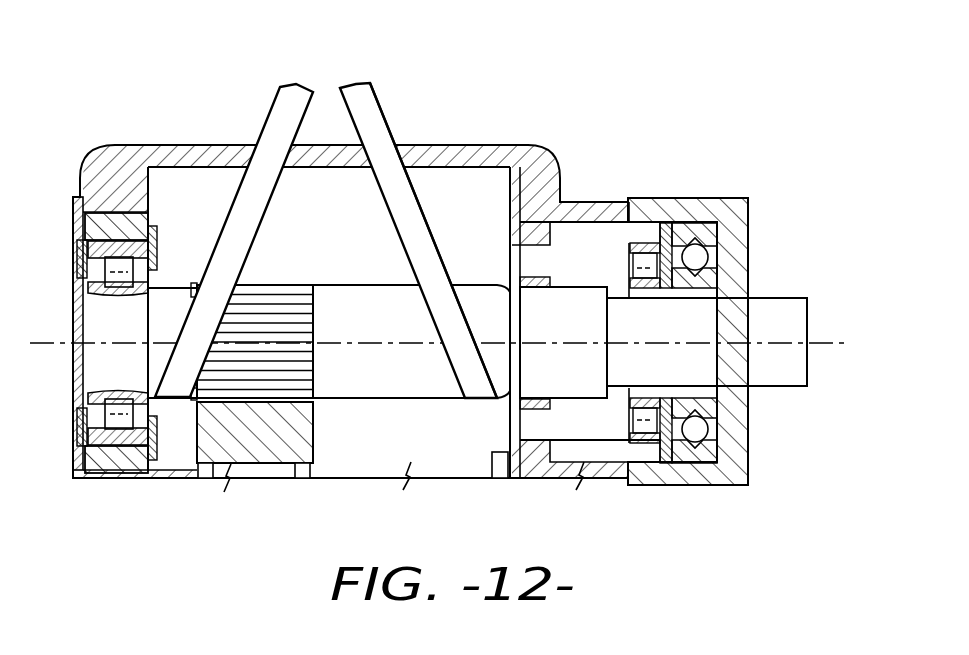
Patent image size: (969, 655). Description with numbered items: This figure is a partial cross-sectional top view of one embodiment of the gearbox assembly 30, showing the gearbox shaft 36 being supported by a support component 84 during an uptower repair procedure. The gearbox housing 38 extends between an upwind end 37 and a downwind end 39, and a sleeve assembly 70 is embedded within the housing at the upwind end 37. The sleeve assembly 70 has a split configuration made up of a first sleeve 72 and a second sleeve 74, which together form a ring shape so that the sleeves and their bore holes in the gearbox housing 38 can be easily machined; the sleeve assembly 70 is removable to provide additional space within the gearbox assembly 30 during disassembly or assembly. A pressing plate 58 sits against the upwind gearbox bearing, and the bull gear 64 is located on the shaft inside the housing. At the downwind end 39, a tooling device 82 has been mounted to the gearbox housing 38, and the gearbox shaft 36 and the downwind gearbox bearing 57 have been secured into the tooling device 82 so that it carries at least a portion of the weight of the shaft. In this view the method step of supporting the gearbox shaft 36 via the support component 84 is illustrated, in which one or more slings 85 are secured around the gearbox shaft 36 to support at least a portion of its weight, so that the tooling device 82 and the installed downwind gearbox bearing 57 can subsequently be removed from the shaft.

The gearbox assembly 30 is at (135, 95).
The gearbox shaft 36 is at (352, 282).
The upwind end 37 is at (147, 193).
The gearbox housing 38 is at (502, 142).
The downwind end 39 is at (508, 193).
The downwind gearbox bearing 57 is at (688, 222).
The pressing plate 58 is at (157, 234).
The bull gear 64 is at (300, 440).
The sleeve assembly 70 is at (71, 222).
The first sleeve 72 is at (78, 250).
The second sleeve 74 is at (110, 478).
The tooling device 82 is at (752, 233).
The support component 84 is at (379, 98).
The sling 85 is at (392, 130).